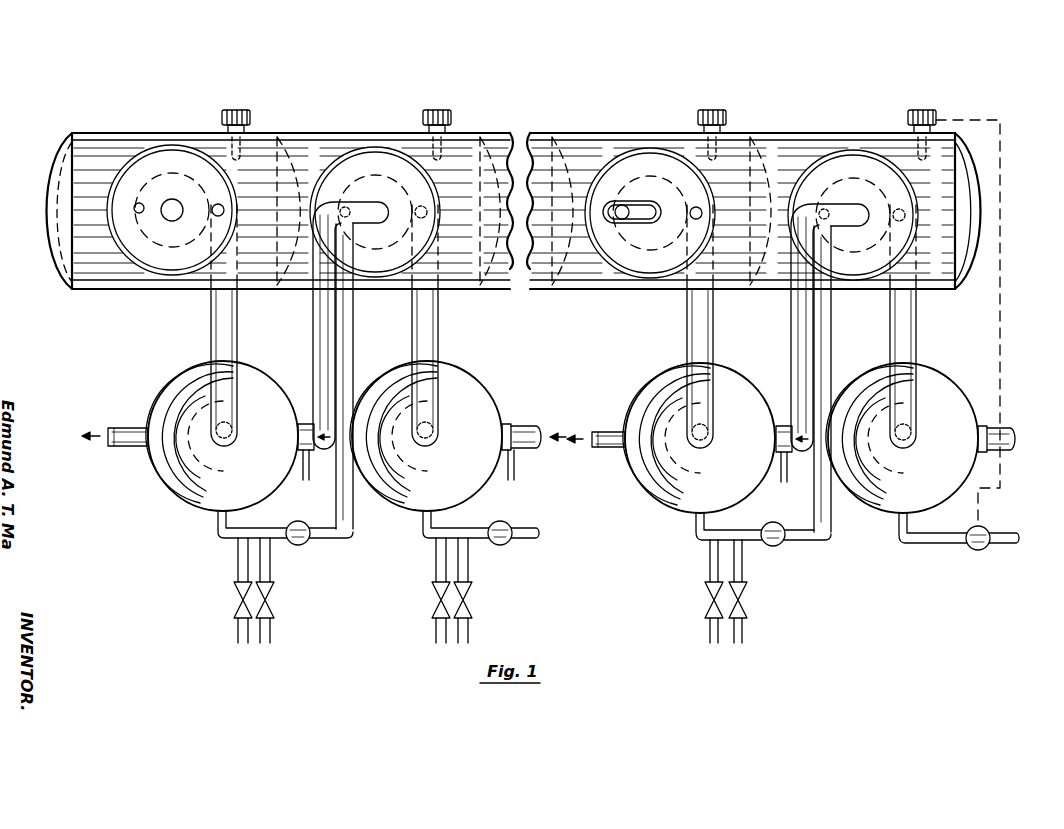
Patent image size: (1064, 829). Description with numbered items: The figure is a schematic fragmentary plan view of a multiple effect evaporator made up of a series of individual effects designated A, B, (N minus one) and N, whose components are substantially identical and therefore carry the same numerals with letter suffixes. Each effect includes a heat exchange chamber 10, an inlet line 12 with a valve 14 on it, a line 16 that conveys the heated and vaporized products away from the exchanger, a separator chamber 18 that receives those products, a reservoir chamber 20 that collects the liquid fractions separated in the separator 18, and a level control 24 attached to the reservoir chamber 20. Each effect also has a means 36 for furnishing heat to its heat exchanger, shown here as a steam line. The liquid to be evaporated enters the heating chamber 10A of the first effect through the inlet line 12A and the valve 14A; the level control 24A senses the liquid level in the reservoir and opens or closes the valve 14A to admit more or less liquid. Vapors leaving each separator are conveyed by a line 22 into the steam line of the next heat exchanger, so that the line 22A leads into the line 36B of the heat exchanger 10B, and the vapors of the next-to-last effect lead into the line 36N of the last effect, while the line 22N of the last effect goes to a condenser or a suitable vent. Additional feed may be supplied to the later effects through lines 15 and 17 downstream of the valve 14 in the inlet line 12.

The heat exchange chamber 10 is at (254, 372).
The heat exchange chamber of the first effect 10A is at (928, 374).
The heat exchange chamber of the second effect 10B is at (728, 374).
The inlet line 12 is at (318, 538).
The inlet line of the first effect 12A is at (1002, 534).
The valve 14 is at (295, 545).
The valve of the first effect 14A is at (974, 550).
The feed line 15 is at (265, 650).
The line 16 is at (240, 320).
The feed line 17 is at (243, 650).
The separator chamber 18 is at (110, 188).
The reservoir chamber 20 is at (186, 126).
The line 22 is at (644, 204).
The vapor line of the first effect 22A is at (846, 208).
The vapor line of the last effect 22N is at (178, 196).
The level control 24 is at (242, 112).
The level control of the first effect 24A is at (936, 112).
The heating means 36 is at (516, 424).
The steam line of the second effect 36B is at (784, 424).
The steam line of the last effect 36N is at (306, 422).